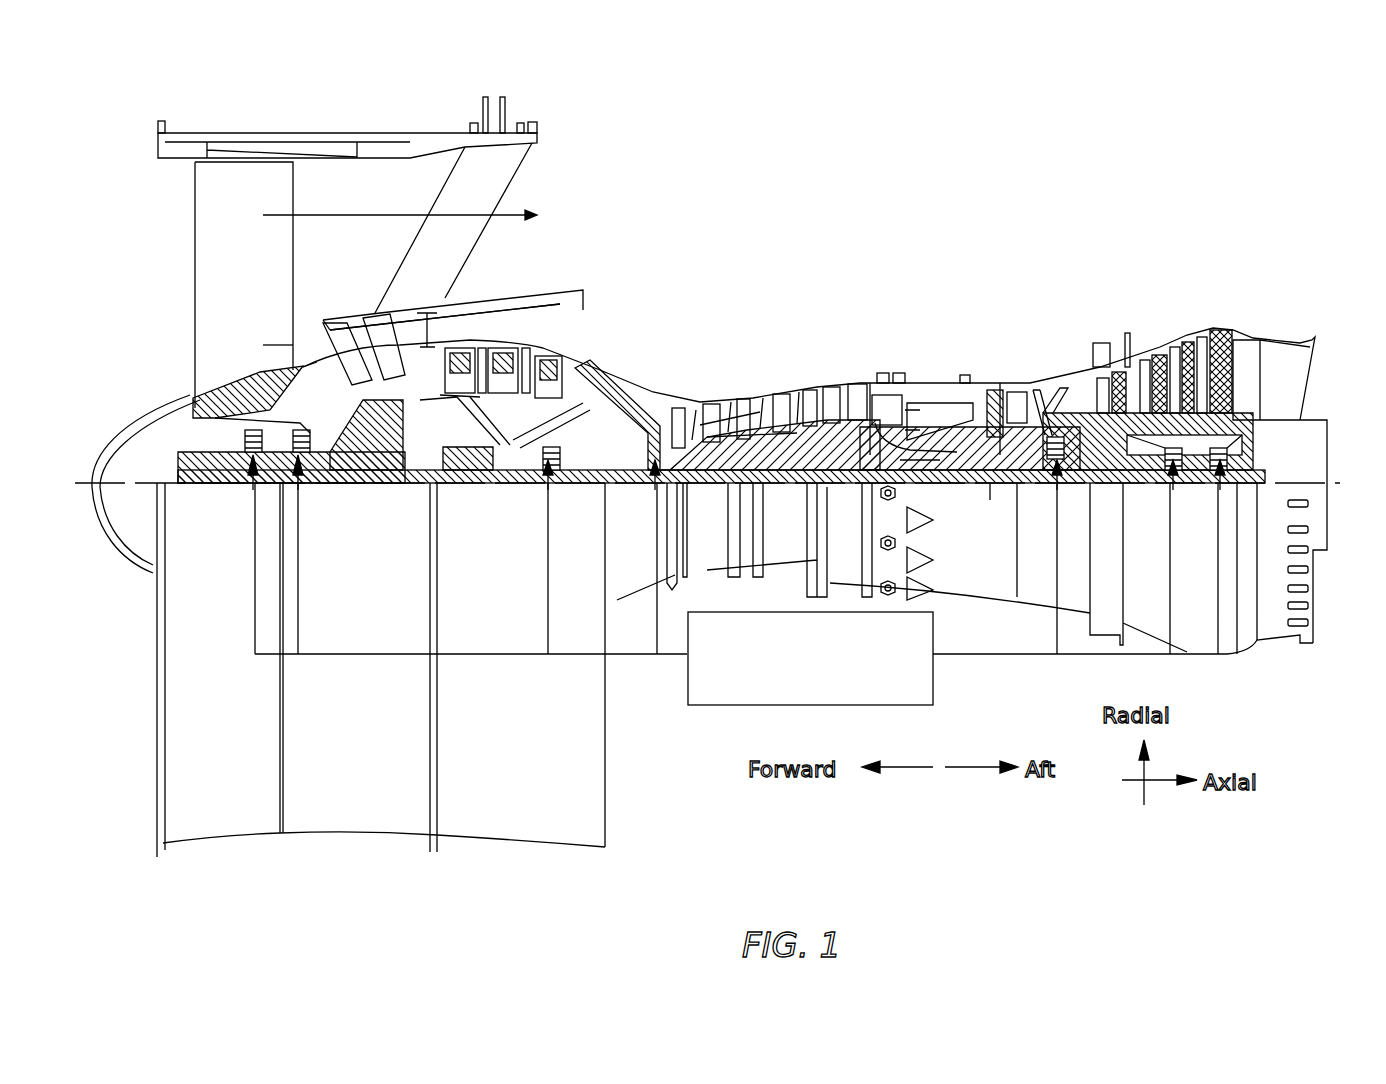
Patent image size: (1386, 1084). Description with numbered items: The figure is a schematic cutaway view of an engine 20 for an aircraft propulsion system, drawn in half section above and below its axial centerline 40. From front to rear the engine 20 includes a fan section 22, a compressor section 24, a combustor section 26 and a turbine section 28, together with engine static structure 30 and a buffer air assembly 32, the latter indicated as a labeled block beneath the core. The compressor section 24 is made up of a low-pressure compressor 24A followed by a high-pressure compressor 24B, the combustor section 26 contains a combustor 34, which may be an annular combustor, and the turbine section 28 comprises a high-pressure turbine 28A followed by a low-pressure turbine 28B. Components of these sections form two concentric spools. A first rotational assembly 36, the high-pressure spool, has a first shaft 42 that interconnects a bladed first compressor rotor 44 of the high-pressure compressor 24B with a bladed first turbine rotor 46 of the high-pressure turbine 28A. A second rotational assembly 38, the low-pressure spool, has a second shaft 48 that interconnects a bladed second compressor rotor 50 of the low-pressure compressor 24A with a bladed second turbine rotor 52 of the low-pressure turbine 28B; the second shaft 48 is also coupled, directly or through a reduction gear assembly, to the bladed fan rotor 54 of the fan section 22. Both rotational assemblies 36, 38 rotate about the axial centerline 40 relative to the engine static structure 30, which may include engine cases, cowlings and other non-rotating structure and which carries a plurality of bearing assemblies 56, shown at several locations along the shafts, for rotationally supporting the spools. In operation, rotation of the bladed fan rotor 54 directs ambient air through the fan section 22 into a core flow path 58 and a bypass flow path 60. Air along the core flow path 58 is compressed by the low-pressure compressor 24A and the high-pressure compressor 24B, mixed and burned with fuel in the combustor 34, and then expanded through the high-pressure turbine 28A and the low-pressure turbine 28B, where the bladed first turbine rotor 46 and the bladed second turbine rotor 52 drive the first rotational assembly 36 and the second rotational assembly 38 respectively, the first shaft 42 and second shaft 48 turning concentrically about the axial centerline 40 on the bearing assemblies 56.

The engine 20 is at (1196, 158).
The fan section 22 is at (438, 118).
The compressor section 24 is at (880, 263).
The low-pressure compressor 24A is at (570, 330).
The high-pressure compressor 24B is at (817, 360).
The combustor section 26 is at (1005, 265).
The turbine section 28 is at (1257, 265).
The high-pressure turbine 28A is at (1017, 355).
The low-pressure turbine 28B is at (1150, 322).
The engine static structure 30 is at (1062, 382).
The buffer air assembly 32 is at (935, 675).
The combustor 34 is at (940, 415).
The first rotational assembly 36 is at (815, 492).
The second rotational assembly 38 is at (1078, 500).
The axial centerline 40 is at (188, 490).
The first shaft 42 is at (917, 462).
The bladed first compressor rotor 44 is at (797, 433).
The bladed first turbine rotor 46 is at (1000, 440).
The second shaft 48 is at (995, 487).
The bladed second compressor rotor 50 is at (505, 365).
The bladed second turbine rotor 52 is at (1187, 333).
The bladed fan rotor 54 is at (227, 392).
The bearing assemblies 56 is at (303, 490).
The core flow path 58 is at (597, 383).
The bypass flow path 60 is at (442, 265).